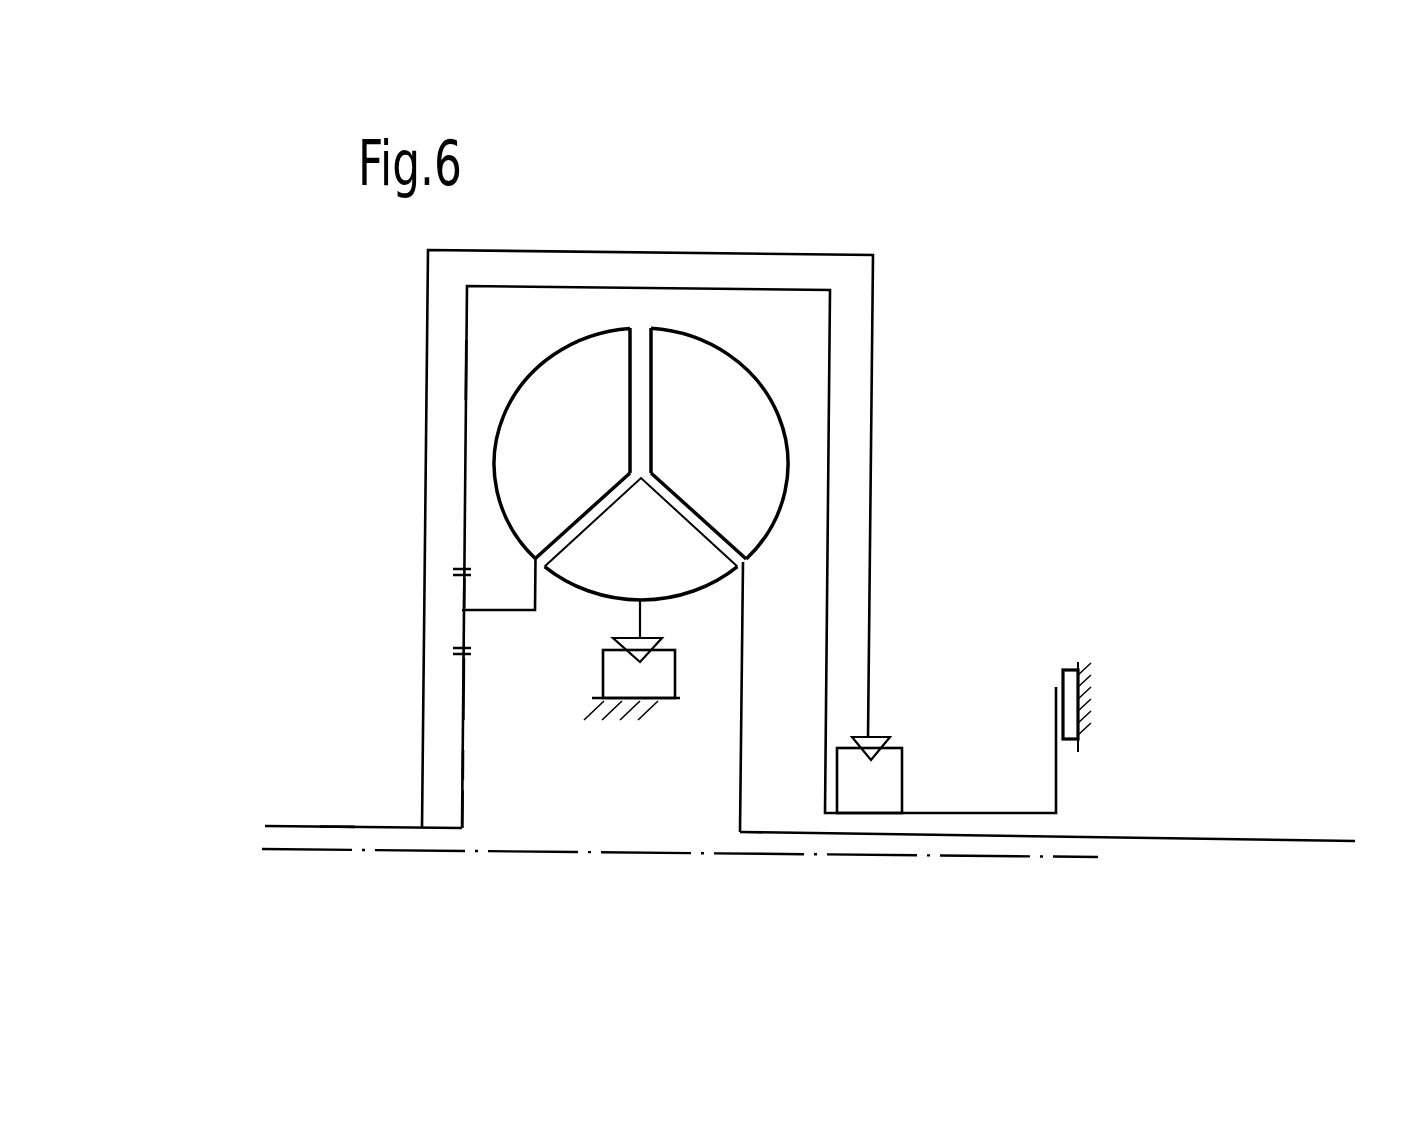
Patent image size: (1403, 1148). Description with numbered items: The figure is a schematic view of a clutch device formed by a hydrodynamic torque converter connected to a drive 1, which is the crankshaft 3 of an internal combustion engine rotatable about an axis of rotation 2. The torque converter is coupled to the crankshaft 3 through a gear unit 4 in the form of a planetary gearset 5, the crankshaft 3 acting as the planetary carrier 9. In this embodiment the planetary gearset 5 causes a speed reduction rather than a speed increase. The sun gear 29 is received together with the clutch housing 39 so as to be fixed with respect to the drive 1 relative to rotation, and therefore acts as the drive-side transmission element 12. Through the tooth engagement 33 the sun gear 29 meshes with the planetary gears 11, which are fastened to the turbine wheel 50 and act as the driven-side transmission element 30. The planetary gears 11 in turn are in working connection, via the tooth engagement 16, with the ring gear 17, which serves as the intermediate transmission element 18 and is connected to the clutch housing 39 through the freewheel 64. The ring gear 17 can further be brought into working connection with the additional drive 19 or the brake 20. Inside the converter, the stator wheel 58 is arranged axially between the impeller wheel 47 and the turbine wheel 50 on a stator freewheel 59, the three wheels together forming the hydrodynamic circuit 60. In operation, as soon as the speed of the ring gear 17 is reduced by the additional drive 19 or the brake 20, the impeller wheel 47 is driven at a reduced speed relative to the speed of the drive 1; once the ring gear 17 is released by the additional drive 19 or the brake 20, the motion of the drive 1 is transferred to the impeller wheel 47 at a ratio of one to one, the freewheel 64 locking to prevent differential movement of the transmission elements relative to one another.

The drive 1 is at (337, 838).
The axis of rotation 2 is at (423, 851).
The crankshaft 3 is at (362, 827).
The gear unit 4 is at (472, 771).
The planetary gearset 5 is at (472, 701).
The planetary carrier 9 is at (533, 428).
The planetary gears 11 is at (460, 590).
The drive-side transmission element 12 is at (453, 671).
The tooth engagement 16 is at (460, 572).
The ring gear 17 is at (465, 372).
The intermediate transmission element 18 is at (458, 308).
The additional drive 19 is at (1072, 697).
The brake 20 is at (1072, 728).
The sun gear 29 is at (462, 805).
The driven-side transmission element 30 is at (453, 618).
The tooth engagement 33 is at (462, 650).
The clutch housing 39 is at (738, 253).
The impeller wheel 47 is at (762, 492).
The turbine wheel 50 is at (593, 358).
The stator wheel 58 is at (745, 594).
The stator freewheel 59 is at (640, 645).
The hydrodynamic circuit 60 is at (640, 350).
The freewheel 64 is at (870, 745).